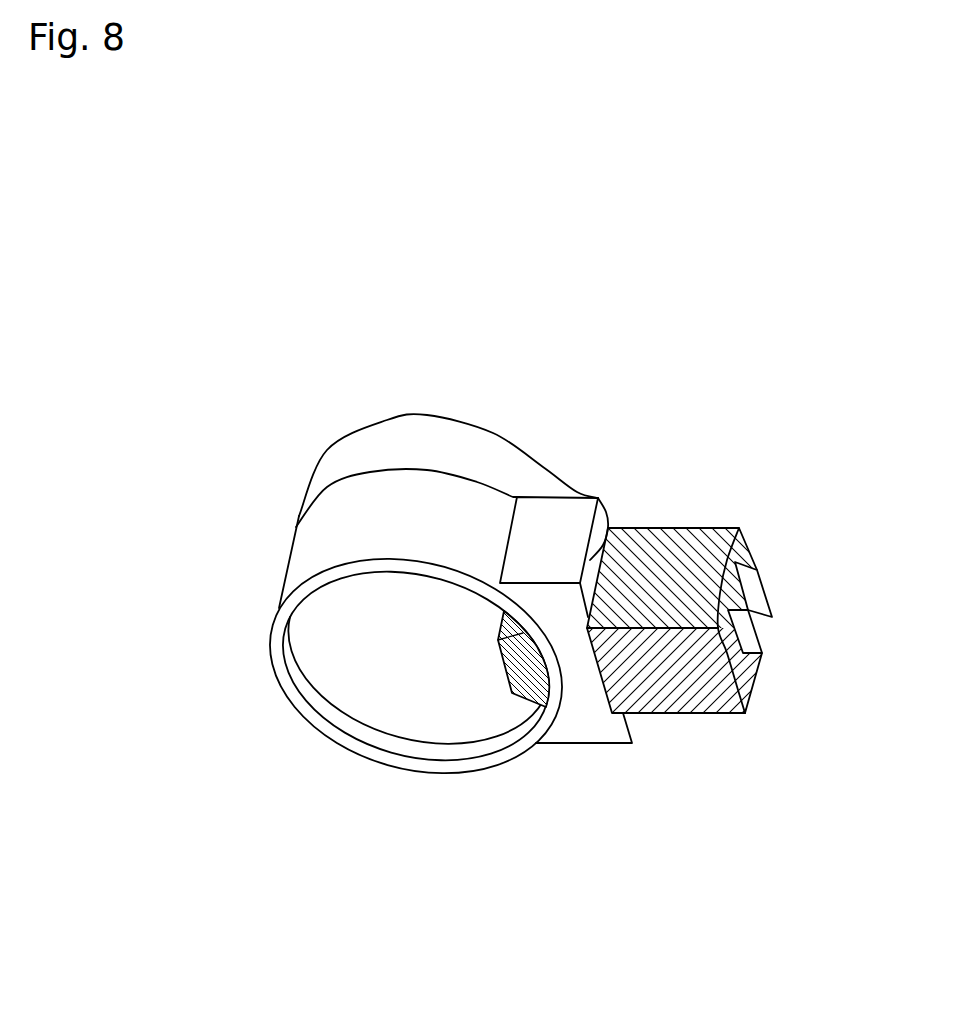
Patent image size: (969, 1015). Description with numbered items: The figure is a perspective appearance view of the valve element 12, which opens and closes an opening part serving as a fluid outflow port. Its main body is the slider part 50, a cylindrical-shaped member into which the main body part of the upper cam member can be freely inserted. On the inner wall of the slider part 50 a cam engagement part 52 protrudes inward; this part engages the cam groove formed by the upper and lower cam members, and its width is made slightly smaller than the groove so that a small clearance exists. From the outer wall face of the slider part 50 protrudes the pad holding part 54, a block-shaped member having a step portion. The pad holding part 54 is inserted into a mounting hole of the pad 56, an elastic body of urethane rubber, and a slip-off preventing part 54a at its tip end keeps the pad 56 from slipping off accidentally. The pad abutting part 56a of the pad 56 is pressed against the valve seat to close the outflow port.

The valve element 12 is at (700, 475).
The slider part 50 is at (337, 457).
The cam engagement part 52 is at (533, 700).
The pad holding part 54 is at (608, 527).
The slip-off preventing part 54a is at (762, 617).
The pad 56 is at (758, 715).
The pad abutting part 56a is at (677, 680).